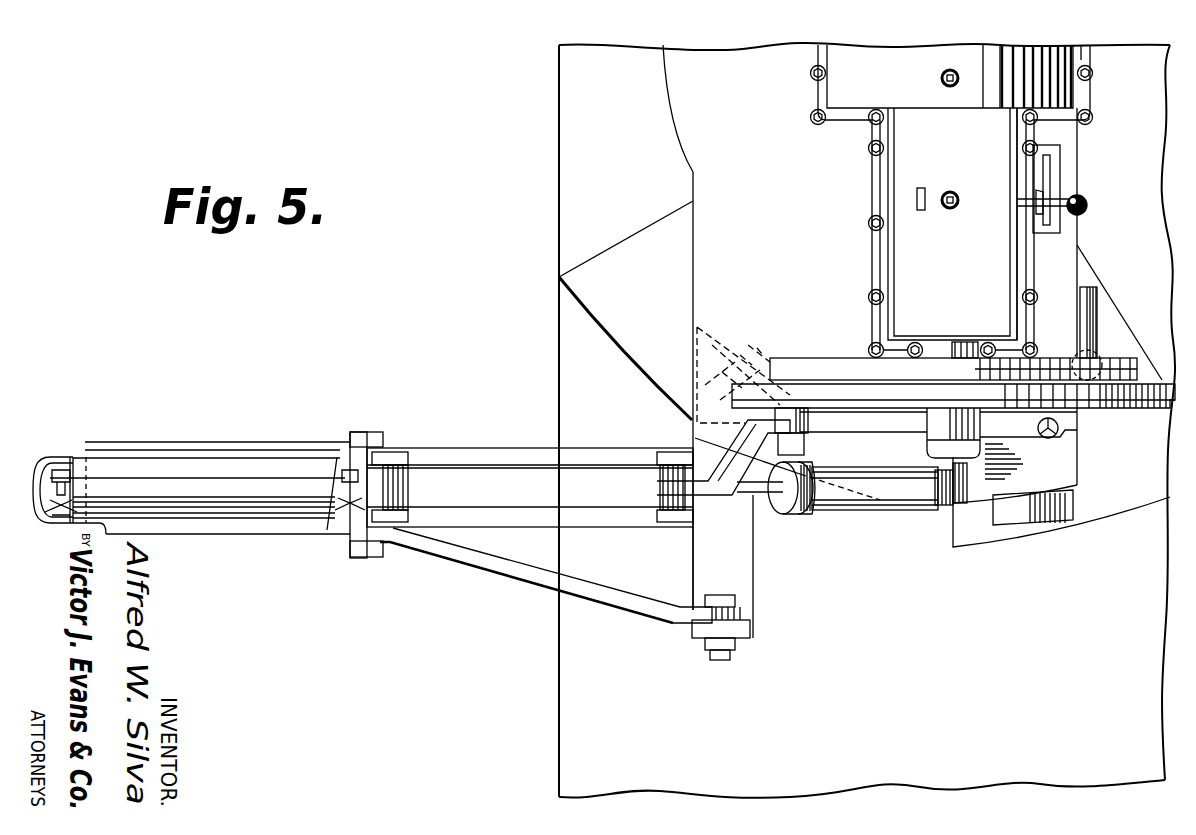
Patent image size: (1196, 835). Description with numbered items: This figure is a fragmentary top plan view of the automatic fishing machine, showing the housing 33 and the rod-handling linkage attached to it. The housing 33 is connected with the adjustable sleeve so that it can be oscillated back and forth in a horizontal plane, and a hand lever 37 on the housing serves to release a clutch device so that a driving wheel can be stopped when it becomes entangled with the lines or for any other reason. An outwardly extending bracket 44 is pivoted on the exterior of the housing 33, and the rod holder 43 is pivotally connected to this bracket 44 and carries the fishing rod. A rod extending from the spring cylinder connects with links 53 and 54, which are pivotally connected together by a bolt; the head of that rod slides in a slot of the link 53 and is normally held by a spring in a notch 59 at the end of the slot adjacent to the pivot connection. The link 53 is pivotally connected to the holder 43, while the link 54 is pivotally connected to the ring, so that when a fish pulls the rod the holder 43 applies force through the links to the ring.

The housing 33 is at (903, 273).
The hand lever 37 is at (1088, 209).
The rod holder 43 is at (318, 443).
The bracket 44 is at (505, 568).
The link 53 is at (548, 485).
The link 54 is at (752, 496).
The notch 59 is at (855, 500).